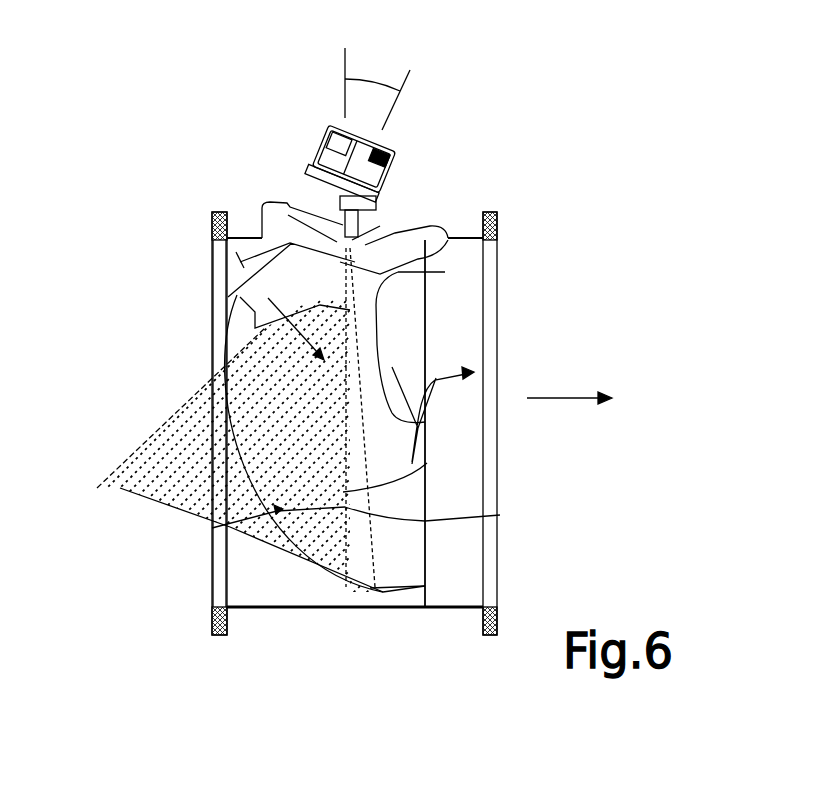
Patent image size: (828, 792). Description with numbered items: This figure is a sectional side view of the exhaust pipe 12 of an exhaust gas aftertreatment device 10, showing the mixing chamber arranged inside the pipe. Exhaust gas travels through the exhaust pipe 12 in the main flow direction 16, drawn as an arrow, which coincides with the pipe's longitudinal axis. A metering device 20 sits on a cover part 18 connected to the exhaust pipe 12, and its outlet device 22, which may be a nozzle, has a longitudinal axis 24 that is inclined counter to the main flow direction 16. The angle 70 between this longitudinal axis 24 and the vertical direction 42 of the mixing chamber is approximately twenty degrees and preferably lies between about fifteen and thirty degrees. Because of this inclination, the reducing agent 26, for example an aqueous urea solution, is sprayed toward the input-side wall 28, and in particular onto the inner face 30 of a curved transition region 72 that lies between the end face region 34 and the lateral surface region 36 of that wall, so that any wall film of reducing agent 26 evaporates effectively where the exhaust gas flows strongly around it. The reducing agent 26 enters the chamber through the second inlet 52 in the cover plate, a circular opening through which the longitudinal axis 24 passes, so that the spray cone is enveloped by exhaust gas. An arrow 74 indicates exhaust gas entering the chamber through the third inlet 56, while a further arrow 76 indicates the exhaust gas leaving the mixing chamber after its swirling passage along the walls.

The exhaust gas aftertreatment device 10 is at (152, 204).
The exhaust pipe 12 is at (228, 600).
The main flow direction 16 is at (562, 396).
The cover part 18 is at (290, 215).
The metering device 20 is at (418, 147).
The outlet device 22 is at (397, 220).
The longitudinal axis 24 is at (402, 102).
The reducing agent 26 is at (357, 368).
The input-side wall 28 is at (212, 345).
The inner face 30 is at (500, 515).
The end face region 34 is at (212, 392).
The lateral surface region 36 is at (383, 593).
The vertical direction 42 is at (345, 68).
The second inlet 52 is at (380, 226).
The third inlet 56 is at (228, 300).
The angle 70 is at (372, 82).
The curved transition region 72 is at (212, 528).
The arrow 74 is at (243, 245).
The further arrow 76 is at (427, 463).